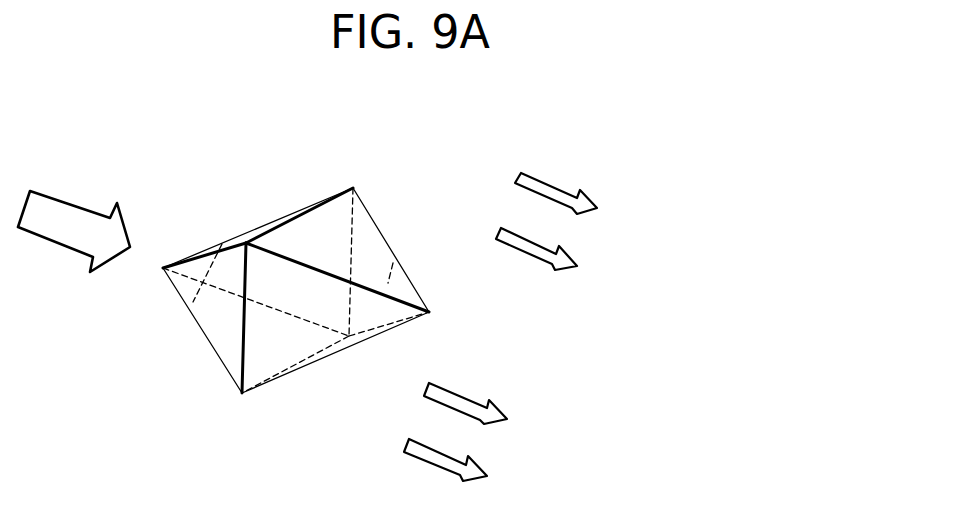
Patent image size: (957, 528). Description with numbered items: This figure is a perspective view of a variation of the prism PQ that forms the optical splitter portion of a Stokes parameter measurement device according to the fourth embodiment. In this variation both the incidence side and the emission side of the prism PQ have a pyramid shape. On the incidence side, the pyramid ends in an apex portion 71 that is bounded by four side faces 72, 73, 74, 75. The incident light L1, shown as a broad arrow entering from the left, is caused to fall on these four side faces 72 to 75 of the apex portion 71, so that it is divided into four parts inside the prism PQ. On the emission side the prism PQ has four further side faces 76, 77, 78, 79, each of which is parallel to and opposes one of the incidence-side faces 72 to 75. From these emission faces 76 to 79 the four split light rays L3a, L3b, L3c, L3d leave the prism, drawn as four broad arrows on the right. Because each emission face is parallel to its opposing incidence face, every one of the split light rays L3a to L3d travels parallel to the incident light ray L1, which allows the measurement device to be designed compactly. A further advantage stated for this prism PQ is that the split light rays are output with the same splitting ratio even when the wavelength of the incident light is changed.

The prism PQ is at (274, 294).
The apex portion 71 is at (193, 267).
The side face 72 is at (222, 244).
The side face 73 is at (212, 307).
The side face 74 is at (250, 230).
The side face 75 is at (188, 302).
The side face 76 is at (330, 317).
The side face 77 is at (397, 260).
The side face 78 is at (358, 342).
The side face 79 is at (368, 252).
The incident light L1 is at (75, 200).
The split light ray L3a is at (555, 182).
The split light ray L3b is at (532, 238).
The split light ray L3c is at (462, 393).
The split light ray L3d is at (440, 450).